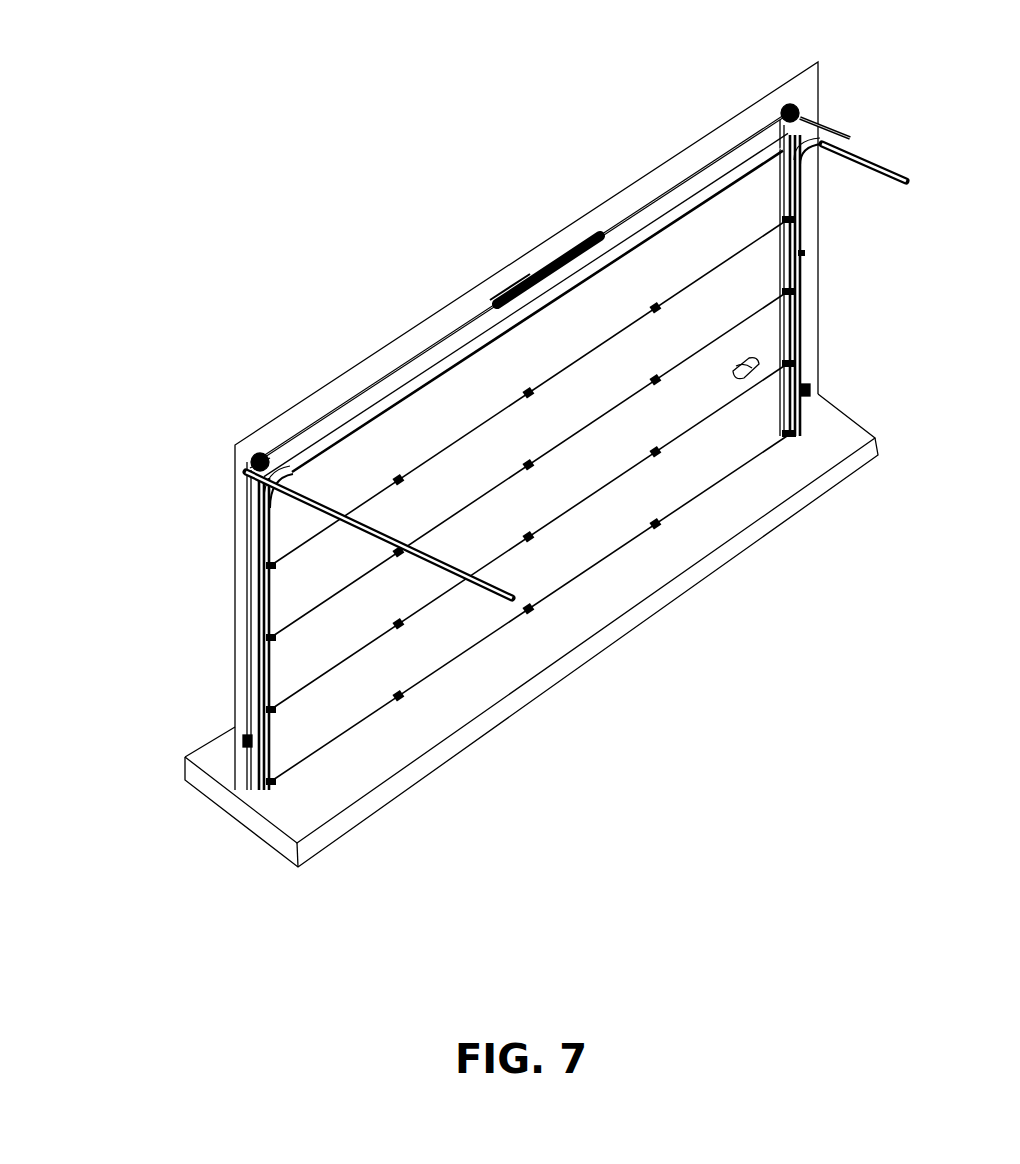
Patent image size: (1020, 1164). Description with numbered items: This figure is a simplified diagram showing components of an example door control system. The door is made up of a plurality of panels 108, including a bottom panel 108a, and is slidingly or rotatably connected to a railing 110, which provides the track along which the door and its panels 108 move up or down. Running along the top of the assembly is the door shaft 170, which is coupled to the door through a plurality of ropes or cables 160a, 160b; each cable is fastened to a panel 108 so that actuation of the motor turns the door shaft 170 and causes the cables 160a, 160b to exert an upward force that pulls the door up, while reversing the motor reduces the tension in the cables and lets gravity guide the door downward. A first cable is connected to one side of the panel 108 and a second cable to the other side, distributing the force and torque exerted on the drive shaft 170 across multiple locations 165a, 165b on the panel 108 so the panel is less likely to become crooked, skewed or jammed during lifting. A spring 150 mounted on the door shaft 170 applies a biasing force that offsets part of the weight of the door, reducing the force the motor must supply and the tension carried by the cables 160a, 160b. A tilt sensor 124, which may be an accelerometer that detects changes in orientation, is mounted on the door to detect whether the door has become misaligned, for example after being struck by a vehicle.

The panels 108 is at (290, 528).
The bottom door panel 108a is at (367, 678).
The railing 110 is at (907, 183).
The tilt sensor 124 is at (743, 387).
The spring 150 is at (567, 253).
The cable 160a is at (236, 450).
The cable 160b is at (825, 118).
The location 165a is at (243, 746).
The location 165b is at (808, 392).
The door shaft 170 is at (340, 403).